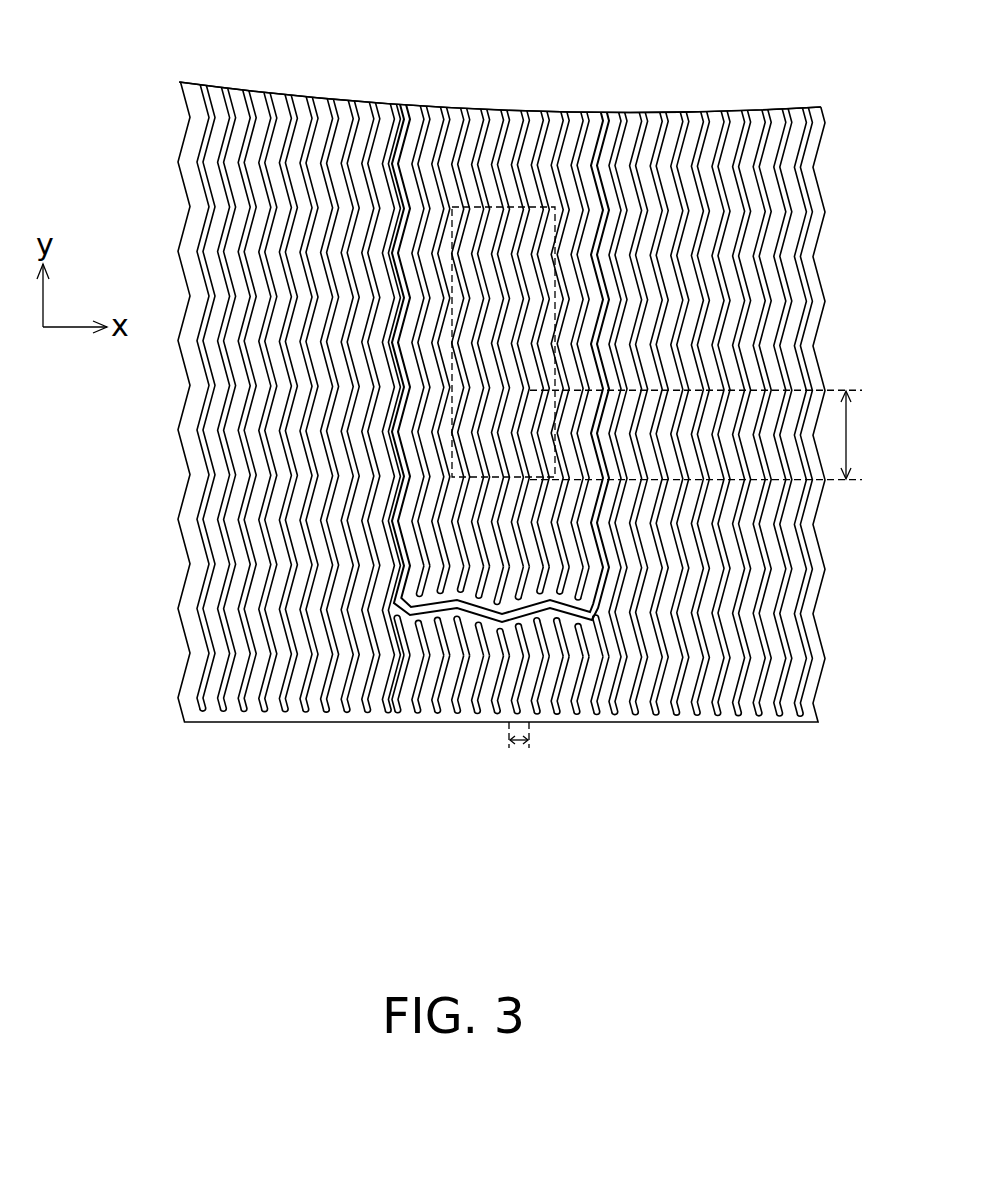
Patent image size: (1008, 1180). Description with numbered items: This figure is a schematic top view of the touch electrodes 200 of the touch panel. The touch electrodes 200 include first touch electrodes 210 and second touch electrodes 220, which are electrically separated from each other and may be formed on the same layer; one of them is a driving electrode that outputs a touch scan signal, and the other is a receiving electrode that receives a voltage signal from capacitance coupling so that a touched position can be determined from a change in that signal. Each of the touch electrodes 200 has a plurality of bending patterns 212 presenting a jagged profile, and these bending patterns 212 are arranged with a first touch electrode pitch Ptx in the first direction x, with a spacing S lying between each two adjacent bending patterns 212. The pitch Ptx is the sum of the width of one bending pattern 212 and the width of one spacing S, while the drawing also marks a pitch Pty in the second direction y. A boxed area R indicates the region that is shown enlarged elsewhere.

The touch electrodes 200 is at (477, 363).
The first touch electrodes 210 is at (610, 127).
The second touch electrodes 220 is at (181, 97).
The bending patterns 212 is at (384, 97).
The spacing S is at (567, 111).
The area R is at (515, 207).
The first touch electrode pitch Ptx is at (520, 753).
The pitch in y direction Pty is at (709, 434).